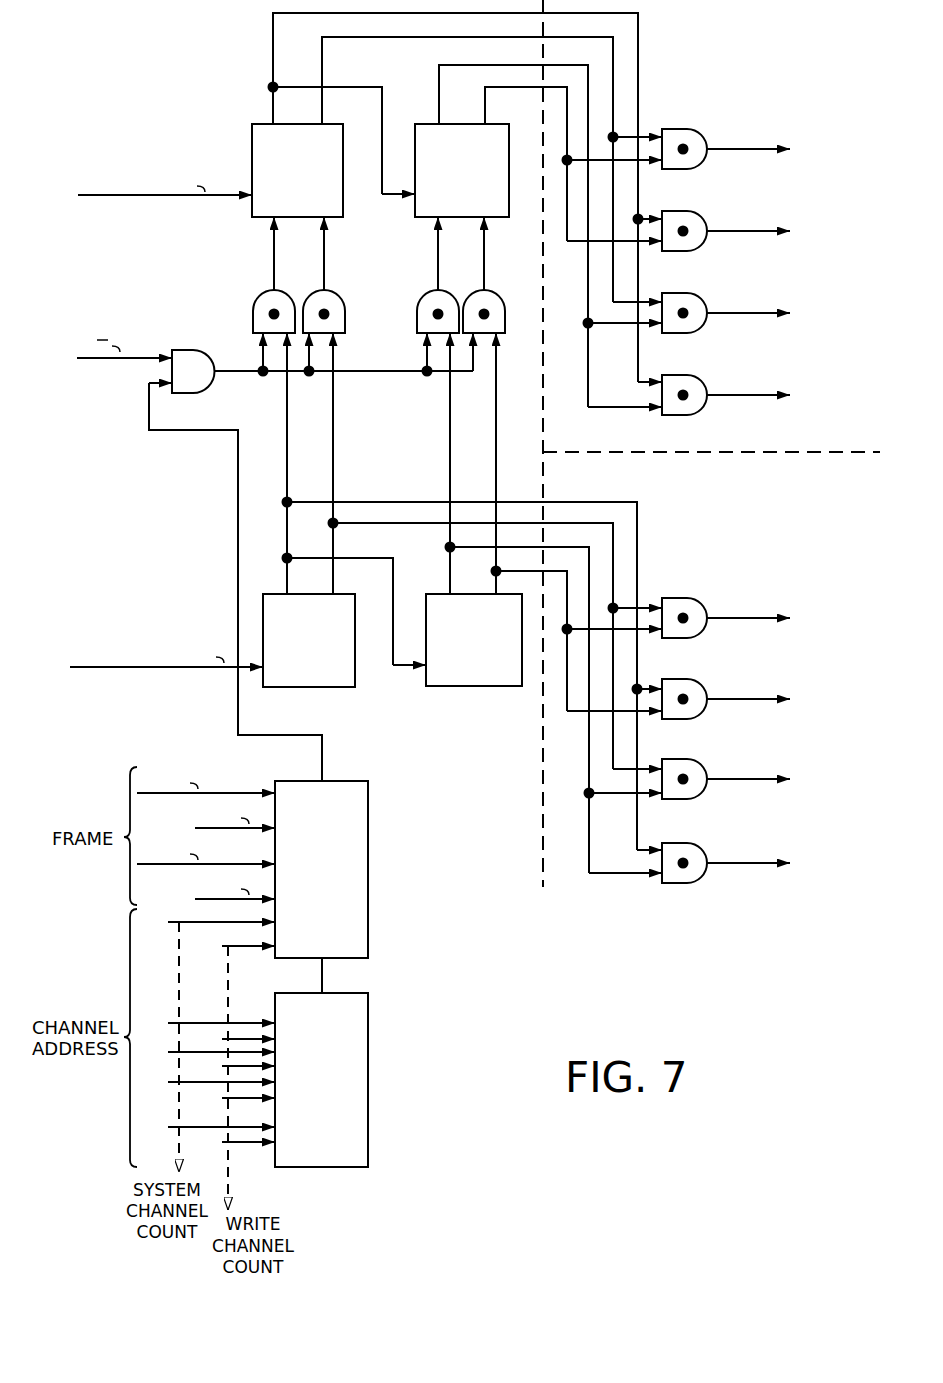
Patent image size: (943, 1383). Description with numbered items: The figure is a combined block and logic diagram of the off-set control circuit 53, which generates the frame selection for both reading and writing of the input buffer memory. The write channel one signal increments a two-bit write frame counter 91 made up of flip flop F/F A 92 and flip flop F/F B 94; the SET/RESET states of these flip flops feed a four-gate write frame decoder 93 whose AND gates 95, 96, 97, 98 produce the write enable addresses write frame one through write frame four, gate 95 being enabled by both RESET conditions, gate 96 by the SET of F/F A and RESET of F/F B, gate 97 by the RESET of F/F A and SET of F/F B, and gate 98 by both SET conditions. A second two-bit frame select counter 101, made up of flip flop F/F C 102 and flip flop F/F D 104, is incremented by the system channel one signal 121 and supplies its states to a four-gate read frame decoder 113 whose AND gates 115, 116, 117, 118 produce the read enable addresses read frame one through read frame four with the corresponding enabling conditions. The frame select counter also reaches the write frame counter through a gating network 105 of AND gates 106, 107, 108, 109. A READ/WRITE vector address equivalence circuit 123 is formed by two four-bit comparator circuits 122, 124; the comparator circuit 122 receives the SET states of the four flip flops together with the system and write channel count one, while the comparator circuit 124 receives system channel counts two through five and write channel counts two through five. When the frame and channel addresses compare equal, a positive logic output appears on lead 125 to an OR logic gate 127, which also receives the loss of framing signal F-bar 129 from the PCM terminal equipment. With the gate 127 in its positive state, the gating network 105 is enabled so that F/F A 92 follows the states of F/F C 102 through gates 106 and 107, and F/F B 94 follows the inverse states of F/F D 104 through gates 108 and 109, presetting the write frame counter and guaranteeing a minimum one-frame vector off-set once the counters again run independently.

The off-set control circuit 53 is at (828, 989).
The write frame counter 91 is at (250, 132).
The flip flop F/F A 92 is at (335, 127).
The write frame decoder 93 is at (713, 252).
The flip flop F/F B 94 is at (500, 127).
The AND gate 95 is at (675, 128).
The AND gate 96 is at (675, 210).
The AND gate 97 is at (675, 294).
The AND gate 98 is at (675, 376).
The frame select counter 101 is at (397, 653).
The flip flop F/F C 102 is at (345, 594).
The flip flop F/F D 104 is at (480, 687).
The gating network 105 is at (361, 294).
The AND gate 106 is at (275, 299).
The AND gate 107 is at (325, 299).
The AND gate 108 is at (426, 295).
The AND gate 109 is at (485, 299).
The read frame decoder 113 is at (711, 672).
The AND gate 115 is at (678, 594).
The AND gate 116 is at (678, 678).
The AND gate 117 is at (678, 758).
The AND gate 118 is at (678, 842).
The SYSTEM CH. 1 signal 121 is at (146, 671).
The 4-bit comparator circuit 122 is at (368, 805).
The READ/WRITE vector address equivalence circuit 123 is at (383, 912).
The 4-bit comparator circuit 124 is at (368, 1003).
The lead 125 is at (238, 543).
The OR logic gate 127 is at (199, 357).
The loss of framing signal F-bar 129 is at (141, 368).